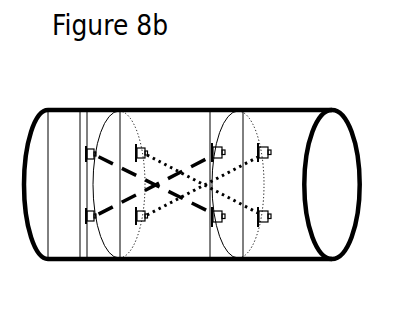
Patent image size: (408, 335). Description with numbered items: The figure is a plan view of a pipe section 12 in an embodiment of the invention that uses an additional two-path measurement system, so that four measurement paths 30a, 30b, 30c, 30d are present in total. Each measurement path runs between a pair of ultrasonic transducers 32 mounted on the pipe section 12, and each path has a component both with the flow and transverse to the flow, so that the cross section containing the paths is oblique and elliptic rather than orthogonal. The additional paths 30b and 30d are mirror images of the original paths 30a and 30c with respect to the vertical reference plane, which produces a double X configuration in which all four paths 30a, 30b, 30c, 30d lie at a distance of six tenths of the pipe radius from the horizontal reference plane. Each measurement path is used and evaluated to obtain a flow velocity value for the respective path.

The pipe section 12 is at (192, 155).
The ultrasonic transducers 32 is at (160, 229).
The measurement path 30a is at (131, 144).
The measurement path 30b is at (203, 145).
The measurement path 30c is at (153, 236).
The measurement path 30d is at (203, 236).